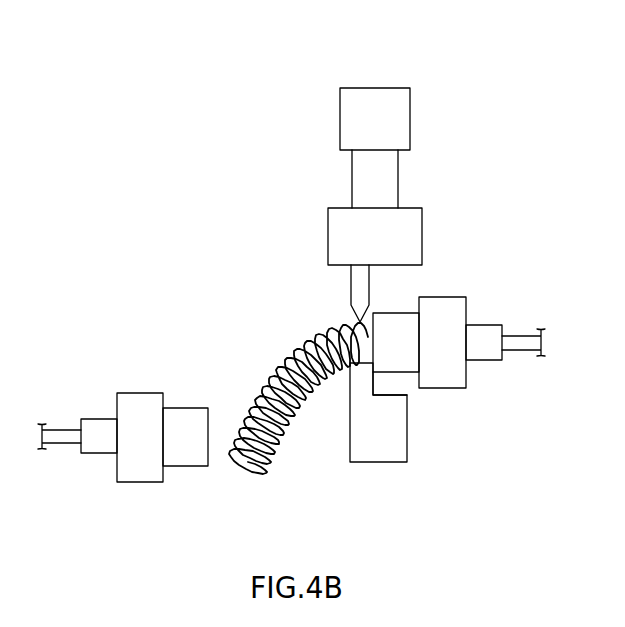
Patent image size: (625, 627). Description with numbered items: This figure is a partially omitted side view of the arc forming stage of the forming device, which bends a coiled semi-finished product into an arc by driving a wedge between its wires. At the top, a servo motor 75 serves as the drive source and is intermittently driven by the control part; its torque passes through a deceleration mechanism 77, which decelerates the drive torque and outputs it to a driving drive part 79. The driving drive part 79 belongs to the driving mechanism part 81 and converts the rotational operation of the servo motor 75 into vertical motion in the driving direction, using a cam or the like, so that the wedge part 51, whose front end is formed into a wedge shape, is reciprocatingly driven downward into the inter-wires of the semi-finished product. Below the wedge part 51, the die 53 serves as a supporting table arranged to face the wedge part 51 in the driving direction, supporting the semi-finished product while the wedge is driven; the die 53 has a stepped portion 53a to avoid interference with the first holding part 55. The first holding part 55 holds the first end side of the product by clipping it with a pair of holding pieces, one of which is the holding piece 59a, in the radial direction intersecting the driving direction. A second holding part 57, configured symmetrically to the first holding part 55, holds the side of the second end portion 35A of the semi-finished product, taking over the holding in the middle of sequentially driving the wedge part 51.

The second end portion 35A is at (229, 466).
The wedge part 51 is at (351, 290).
The die 53 is at (404, 459).
The stepped portion 53a is at (393, 389).
The first holding part 55 is at (453, 391).
The second holding part 57 is at (150, 483).
The holding piece 59a is at (396, 333).
The servo motor 75 is at (376, 110).
The deceleration mechanism 77 is at (388, 180).
The driving drive part 79 is at (410, 236).
The driving mechanism part 81 is at (389, 173).